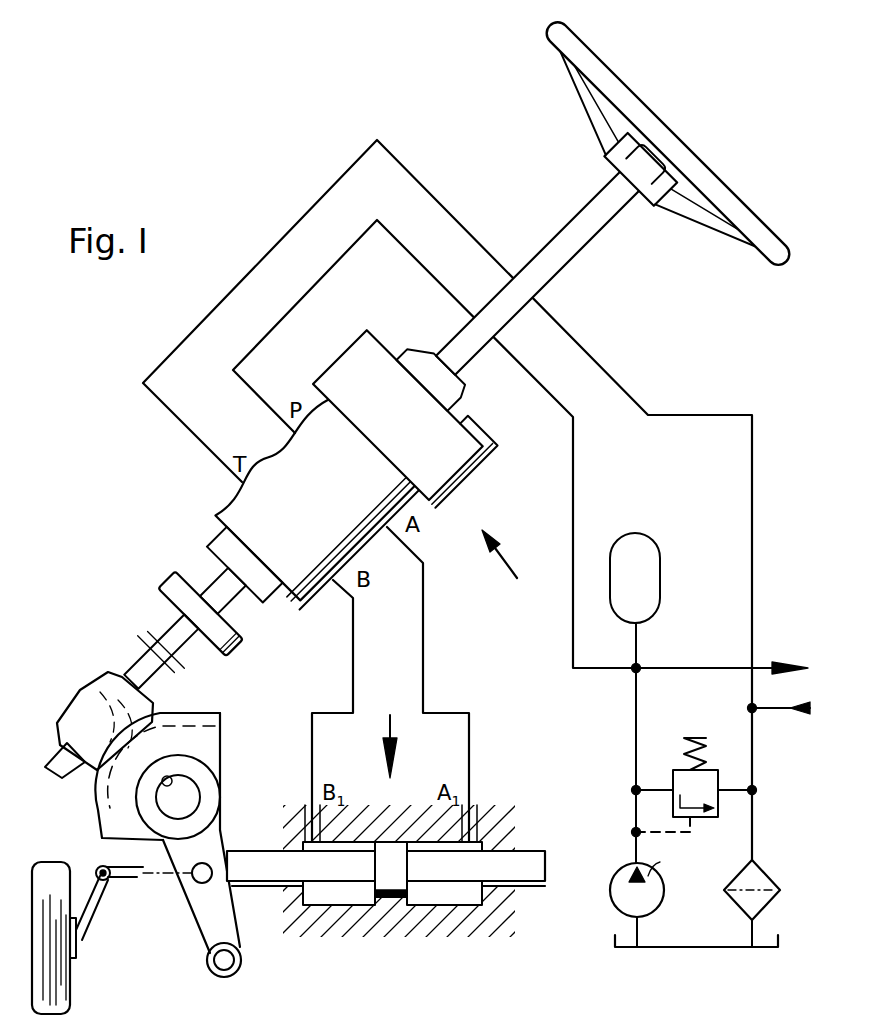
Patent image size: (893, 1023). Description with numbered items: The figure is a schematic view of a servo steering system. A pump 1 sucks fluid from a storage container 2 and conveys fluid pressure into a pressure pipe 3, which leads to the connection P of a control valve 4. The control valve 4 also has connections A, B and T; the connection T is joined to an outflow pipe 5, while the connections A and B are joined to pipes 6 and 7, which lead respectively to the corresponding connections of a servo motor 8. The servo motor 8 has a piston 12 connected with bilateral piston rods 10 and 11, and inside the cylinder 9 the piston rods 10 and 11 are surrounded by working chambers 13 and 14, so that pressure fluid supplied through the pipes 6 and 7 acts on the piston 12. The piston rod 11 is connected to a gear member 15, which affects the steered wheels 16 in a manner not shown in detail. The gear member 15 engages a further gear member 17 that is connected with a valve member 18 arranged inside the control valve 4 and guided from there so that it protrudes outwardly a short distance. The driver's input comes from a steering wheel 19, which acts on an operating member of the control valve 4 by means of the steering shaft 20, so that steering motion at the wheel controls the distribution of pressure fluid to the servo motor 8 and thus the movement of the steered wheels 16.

The pump 1 is at (612, 905).
The storage container 2 is at (688, 950).
The pressure pipe 3 is at (576, 468).
The control valve 4 is at (508, 570).
The outflow pipe 5 is at (750, 543).
The pipe 6 is at (427, 645).
The pipe 7 is at (354, 649).
The servo motor 8 is at (389, 727).
The cylinder 9 is at (342, 906).
The piston rod 10 is at (524, 860).
The piston rod 11 is at (267, 857).
The piston 12 is at (393, 877).
The working chamber 13 is at (457, 897).
The working chamber 14 is at (328, 897).
The gear member 15 is at (207, 908).
The steered wheels 16 is at (48, 973).
The further gear member 17 is at (92, 710).
The valve member 18 is at (222, 587).
The steering wheel 19 is at (695, 172).
The steering shaft 20 is at (558, 245).